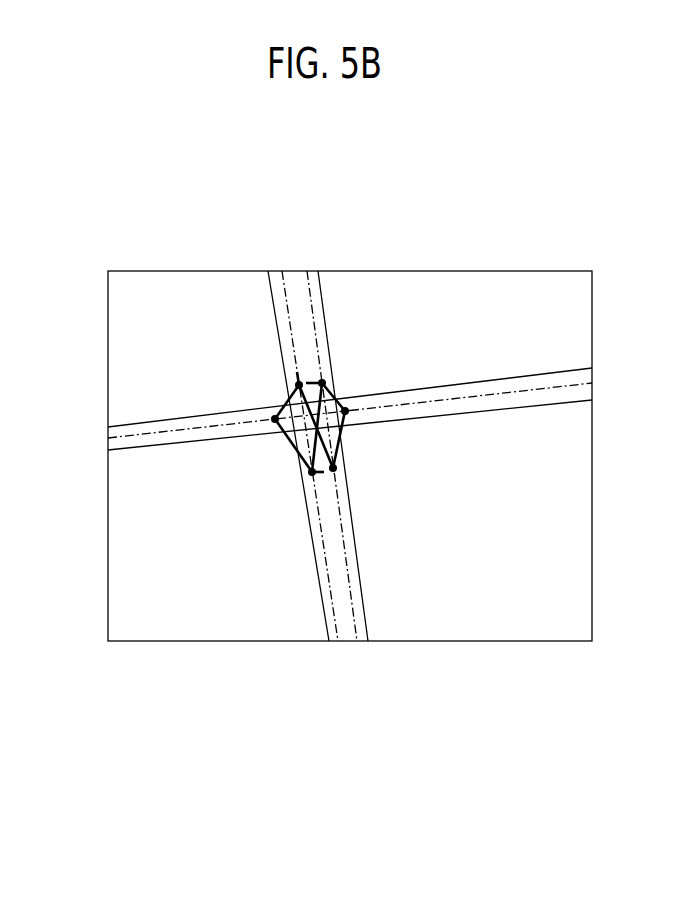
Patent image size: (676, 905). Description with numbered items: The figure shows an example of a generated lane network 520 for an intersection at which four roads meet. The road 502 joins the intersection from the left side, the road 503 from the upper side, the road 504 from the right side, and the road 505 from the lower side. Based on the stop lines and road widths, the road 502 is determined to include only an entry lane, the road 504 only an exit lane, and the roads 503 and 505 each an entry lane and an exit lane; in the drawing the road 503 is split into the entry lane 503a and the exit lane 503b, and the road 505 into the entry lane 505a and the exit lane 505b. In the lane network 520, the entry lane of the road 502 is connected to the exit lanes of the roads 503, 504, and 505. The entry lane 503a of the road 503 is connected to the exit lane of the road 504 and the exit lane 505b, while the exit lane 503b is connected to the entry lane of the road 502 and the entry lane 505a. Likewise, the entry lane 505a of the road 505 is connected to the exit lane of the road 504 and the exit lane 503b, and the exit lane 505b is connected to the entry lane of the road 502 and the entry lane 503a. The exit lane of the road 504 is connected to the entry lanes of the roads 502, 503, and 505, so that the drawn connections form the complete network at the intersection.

The road 502 is at (98, 427).
The road 503 is at (284, 327).
The entry lane 503a is at (323, 308).
The exit lane 503b is at (275, 307).
The road 504 is at (597, 368).
The road 505 is at (355, 587).
The entry lane 505a is at (323, 602).
The exit lane 505b is at (350, 585).
The lane network 520 is at (567, 742).